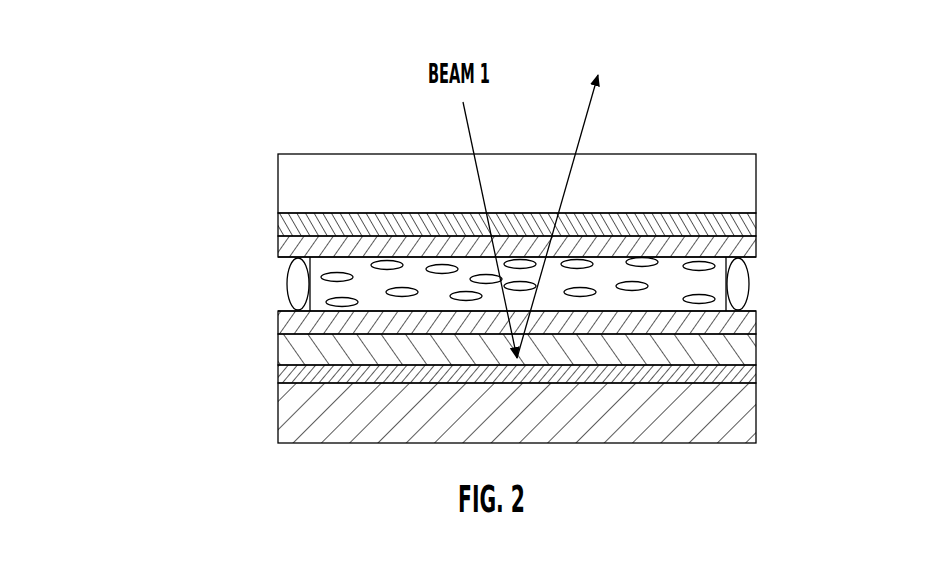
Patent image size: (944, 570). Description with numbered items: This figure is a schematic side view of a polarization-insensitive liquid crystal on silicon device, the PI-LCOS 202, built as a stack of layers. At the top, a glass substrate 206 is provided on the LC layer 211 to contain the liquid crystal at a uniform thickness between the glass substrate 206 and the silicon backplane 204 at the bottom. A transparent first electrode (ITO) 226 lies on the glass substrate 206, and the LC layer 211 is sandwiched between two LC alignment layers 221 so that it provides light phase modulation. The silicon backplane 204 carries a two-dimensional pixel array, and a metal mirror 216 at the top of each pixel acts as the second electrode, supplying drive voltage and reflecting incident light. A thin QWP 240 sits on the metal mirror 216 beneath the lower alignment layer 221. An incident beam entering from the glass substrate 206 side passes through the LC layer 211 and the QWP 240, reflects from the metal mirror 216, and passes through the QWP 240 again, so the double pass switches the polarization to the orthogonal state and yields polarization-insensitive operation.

The glass substrate 206 is at (378, 190).
The first electrode (ITO) 226 is at (277, 222).
The LC layer 211 is at (365, 278).
The LC alignment layer 221 is at (275, 248).
The QWP (quarter-wave plate) 240 is at (222, 370).
The metal mirror 216 is at (277, 373).
The silicon backplane 204 is at (525, 440).
The PI-LCOS 202 is at (604, 193).